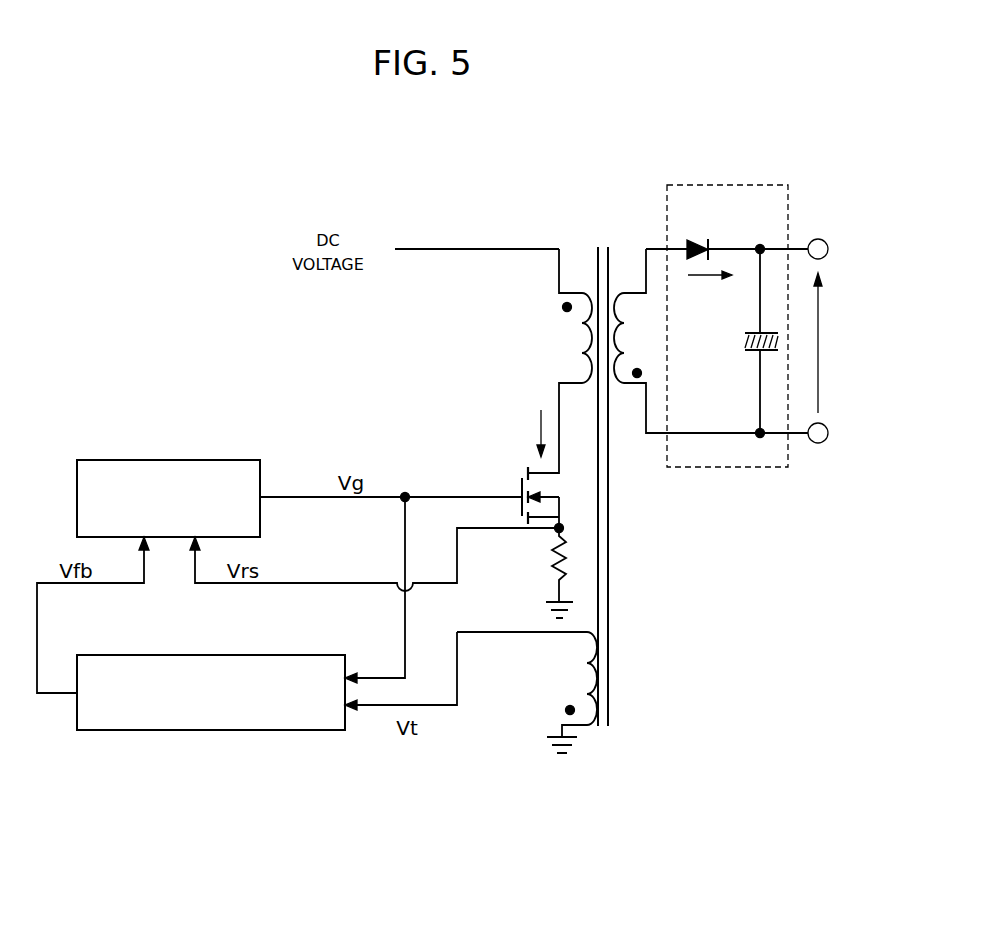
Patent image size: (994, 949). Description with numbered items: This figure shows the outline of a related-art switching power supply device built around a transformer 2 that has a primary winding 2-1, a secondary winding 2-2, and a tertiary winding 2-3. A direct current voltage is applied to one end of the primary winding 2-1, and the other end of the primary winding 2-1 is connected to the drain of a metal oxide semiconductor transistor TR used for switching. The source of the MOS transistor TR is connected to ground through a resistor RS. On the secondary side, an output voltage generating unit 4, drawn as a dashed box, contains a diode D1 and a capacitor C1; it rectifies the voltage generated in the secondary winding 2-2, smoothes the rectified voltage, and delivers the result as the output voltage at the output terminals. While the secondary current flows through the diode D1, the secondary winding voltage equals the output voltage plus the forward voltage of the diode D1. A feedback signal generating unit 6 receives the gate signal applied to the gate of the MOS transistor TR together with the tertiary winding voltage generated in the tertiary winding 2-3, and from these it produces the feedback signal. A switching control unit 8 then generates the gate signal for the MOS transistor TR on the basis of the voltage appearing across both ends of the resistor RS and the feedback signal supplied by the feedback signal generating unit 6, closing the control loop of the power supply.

The transformer 2 is at (655, 232).
The primary winding 2-1 is at (581, 339).
The secondary winding 2-2 is at (612, 398).
The tertiary winding 2-3 is at (585, 676).
The output voltage generating unit 4 is at (730, 184).
The feedback signal generating unit 6 is at (212, 732).
The switching control unit 8 is at (166, 458).
The diode D1 is at (697, 243).
The capacitor C1 is at (744, 341).
The MOS transistor TR is at (519, 469).
The resistor RS is at (543, 573).